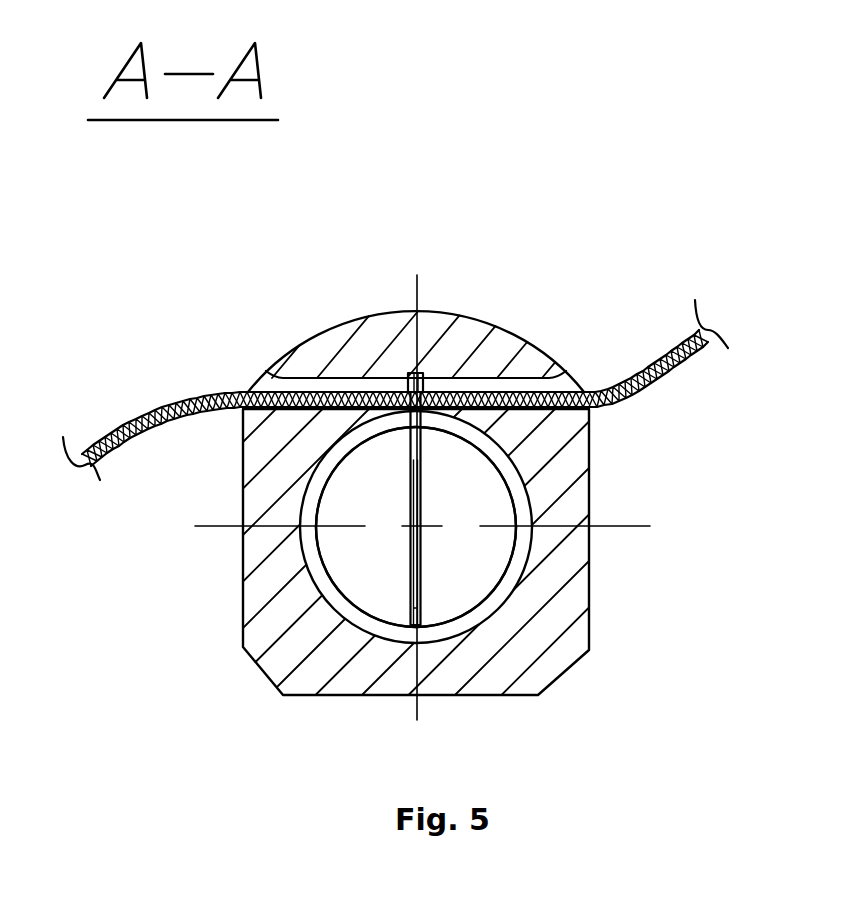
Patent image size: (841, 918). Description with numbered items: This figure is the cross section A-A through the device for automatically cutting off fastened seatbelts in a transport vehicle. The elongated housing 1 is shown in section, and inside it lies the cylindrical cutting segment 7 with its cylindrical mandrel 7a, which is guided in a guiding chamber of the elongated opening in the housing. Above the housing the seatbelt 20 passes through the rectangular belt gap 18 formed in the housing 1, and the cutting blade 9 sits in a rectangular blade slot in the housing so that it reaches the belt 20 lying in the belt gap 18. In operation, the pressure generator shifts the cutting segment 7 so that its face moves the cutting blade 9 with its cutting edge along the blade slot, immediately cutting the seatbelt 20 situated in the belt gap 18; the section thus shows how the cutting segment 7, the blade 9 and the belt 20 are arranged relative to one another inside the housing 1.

The elongated housing 1 is at (523, 653).
The cutting segment 7 is at (503, 450).
The cylindrical mandrel 7a is at (465, 552).
The cutting blade 9 is at (423, 372).
The rectangular belt gap 18 is at (510, 387).
The seatbelt 20 is at (637, 372).